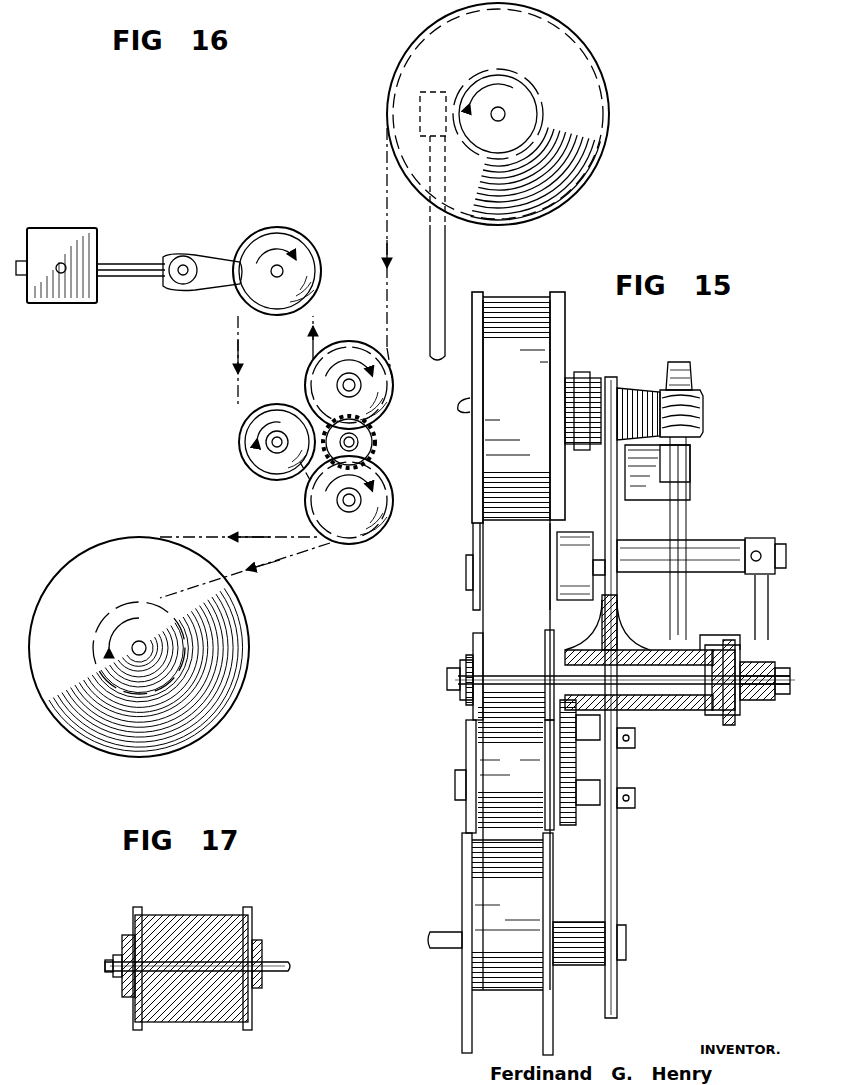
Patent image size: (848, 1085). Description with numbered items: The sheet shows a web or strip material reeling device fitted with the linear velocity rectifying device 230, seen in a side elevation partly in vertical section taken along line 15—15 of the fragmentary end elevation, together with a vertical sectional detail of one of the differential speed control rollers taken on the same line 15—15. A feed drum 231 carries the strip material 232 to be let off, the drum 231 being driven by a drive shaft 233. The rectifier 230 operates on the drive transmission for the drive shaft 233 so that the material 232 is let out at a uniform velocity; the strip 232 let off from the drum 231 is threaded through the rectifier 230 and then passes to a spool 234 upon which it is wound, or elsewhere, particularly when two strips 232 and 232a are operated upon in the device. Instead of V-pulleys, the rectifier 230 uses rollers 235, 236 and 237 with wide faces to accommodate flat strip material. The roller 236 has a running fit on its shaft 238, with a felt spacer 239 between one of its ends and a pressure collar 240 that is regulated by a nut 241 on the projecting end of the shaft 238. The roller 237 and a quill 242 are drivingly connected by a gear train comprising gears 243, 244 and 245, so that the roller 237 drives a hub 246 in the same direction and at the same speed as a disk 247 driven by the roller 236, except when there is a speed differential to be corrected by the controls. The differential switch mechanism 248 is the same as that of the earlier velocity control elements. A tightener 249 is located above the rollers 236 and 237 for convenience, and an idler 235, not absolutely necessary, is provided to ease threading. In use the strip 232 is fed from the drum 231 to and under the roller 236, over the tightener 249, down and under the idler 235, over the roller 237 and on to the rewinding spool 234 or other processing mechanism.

In FIG. 16, the linear velocity rectifying device 230 is at (390, 536).
In FIG. 15, the linear velocity rectifying device 230 is at (748, 706).
In FIG. 16, the feed drum 231 is at (590, 90).
In FIG. 15, the feed drum 231 is at (562, 336).
In FIG. 16, the strip material 232 is at (384, 186).
In FIG. 15, the strip material 232 is at (480, 622).
In FIG. 16, the strip 232a is at (252, 536).
In FIG. 16, the drive shaft 233 is at (440, 262).
In FIG. 15, the drive shaft 233 is at (688, 518).
In FIG. 16, the spool 234 is at (232, 688).
In FIG. 15, the spool 234 is at (462, 1034).
In FIG. 16, the idler 235 is at (238, 444).
In FIG. 16, the roller 236 is at (386, 388).
In FIG. 15, the roller 236 is at (482, 548).
In FIG. 17, the roller 236 is at (228, 922).
In FIG. 16, the roller 237 is at (392, 496).
In FIG. 15, the roller 237 is at (466, 826).
In FIG. 15, the shaft 238 is at (648, 700).
In FIG. 17, the shaft 238 is at (278, 962).
In FIG. 15, the felt spacer 239 is at (472, 705).
In FIG. 17, the felt spacer 239 is at (130, 934).
In FIG. 15, the pressure collar 240 is at (460, 688).
In FIG. 17, the pressure collar 240 is at (120, 945).
In FIG. 15, the nut 241 is at (452, 668).
In FIG. 17, the nut 241 is at (108, 972).
In FIG. 15, the quill 242 is at (700, 712).
In FIG. 15, the gear 243 is at (574, 826).
In FIG. 16, the gear 244 is at (378, 444).
In FIG. 15, the gear 245 is at (578, 638).
In FIG. 15, the hub 246 is at (742, 718).
In FIG. 15, the disk 247 is at (752, 726).
In FIG. 15, the differential switch mechanism 248 is at (722, 632).
In FIG. 16, the tightener 249 is at (312, 252).
In FIG. 16, the line 15— 15 is at (349, 590).